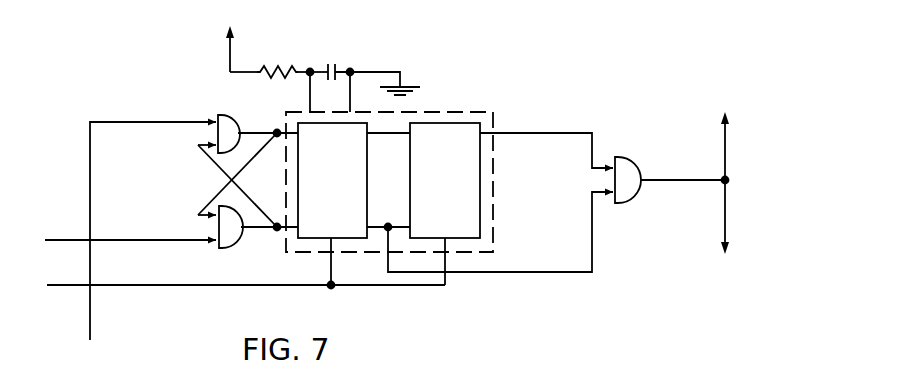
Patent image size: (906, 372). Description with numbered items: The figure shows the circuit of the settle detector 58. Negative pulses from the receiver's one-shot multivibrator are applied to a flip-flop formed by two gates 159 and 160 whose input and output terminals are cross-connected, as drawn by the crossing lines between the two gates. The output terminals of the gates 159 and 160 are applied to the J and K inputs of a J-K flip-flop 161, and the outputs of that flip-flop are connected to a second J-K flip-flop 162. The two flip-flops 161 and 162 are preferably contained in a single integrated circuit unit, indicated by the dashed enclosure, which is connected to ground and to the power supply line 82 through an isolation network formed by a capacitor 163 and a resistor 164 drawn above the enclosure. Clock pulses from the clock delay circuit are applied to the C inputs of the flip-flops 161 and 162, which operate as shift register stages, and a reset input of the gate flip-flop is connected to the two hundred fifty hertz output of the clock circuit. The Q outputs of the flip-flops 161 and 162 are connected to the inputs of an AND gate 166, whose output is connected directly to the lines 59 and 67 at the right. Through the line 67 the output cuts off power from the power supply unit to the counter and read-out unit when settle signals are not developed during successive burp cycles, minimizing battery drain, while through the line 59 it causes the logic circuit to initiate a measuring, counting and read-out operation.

The settle detector 58 is at (580, 80).
The line 59 is at (727, 226).
The line 67 is at (726, 140).
The power supply line 82 is at (232, 50).
The gate 159 is at (232, 118).
The gate 160 is at (233, 249).
The J-K flip-flop 161 is at (367, 152).
The second J-K flip-flop 162 is at (481, 152).
The capacitor 163 is at (338, 68).
The resistor 164 is at (273, 74).
The AND gate 166 is at (625, 199).